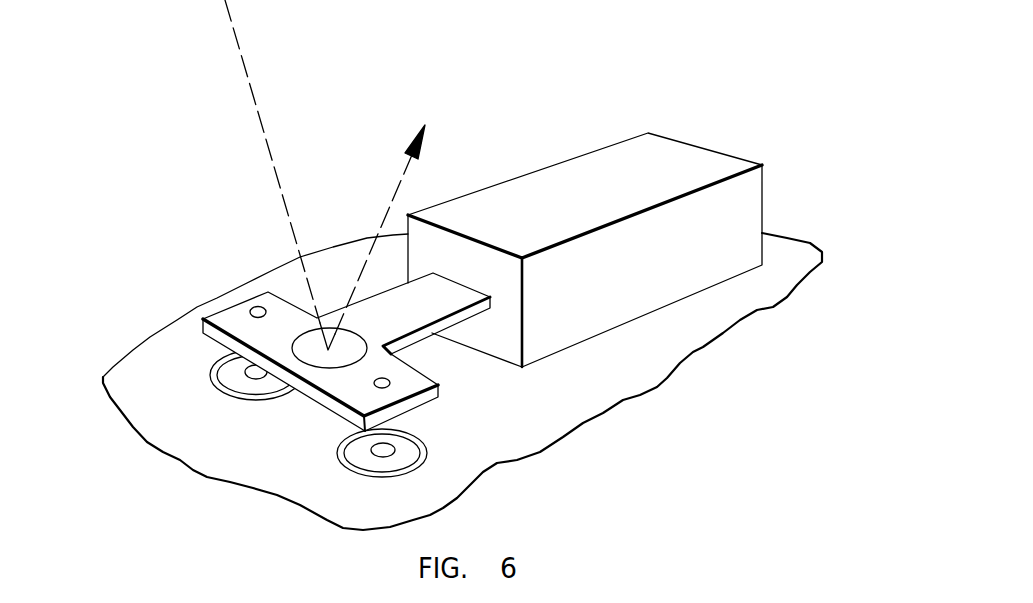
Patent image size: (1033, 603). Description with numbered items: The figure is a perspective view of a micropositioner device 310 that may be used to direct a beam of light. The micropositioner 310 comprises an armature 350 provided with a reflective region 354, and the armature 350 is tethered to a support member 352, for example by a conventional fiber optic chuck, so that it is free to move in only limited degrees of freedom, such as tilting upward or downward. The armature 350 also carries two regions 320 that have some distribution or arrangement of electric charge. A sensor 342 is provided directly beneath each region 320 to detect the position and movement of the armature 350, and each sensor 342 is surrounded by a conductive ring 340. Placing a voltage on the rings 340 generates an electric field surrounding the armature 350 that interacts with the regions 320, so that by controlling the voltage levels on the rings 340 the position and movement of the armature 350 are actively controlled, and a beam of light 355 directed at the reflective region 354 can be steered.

The micropositioner device 310 is at (141, 134).
The regions 320 is at (258, 312).
The conductive ring 340 is at (253, 400).
The sensor 342 is at (257, 373).
The armature 350 is at (398, 315).
The support member 352 is at (573, 182).
The reflective region 354 is at (308, 343).
The beam of light 355 is at (247, 87).